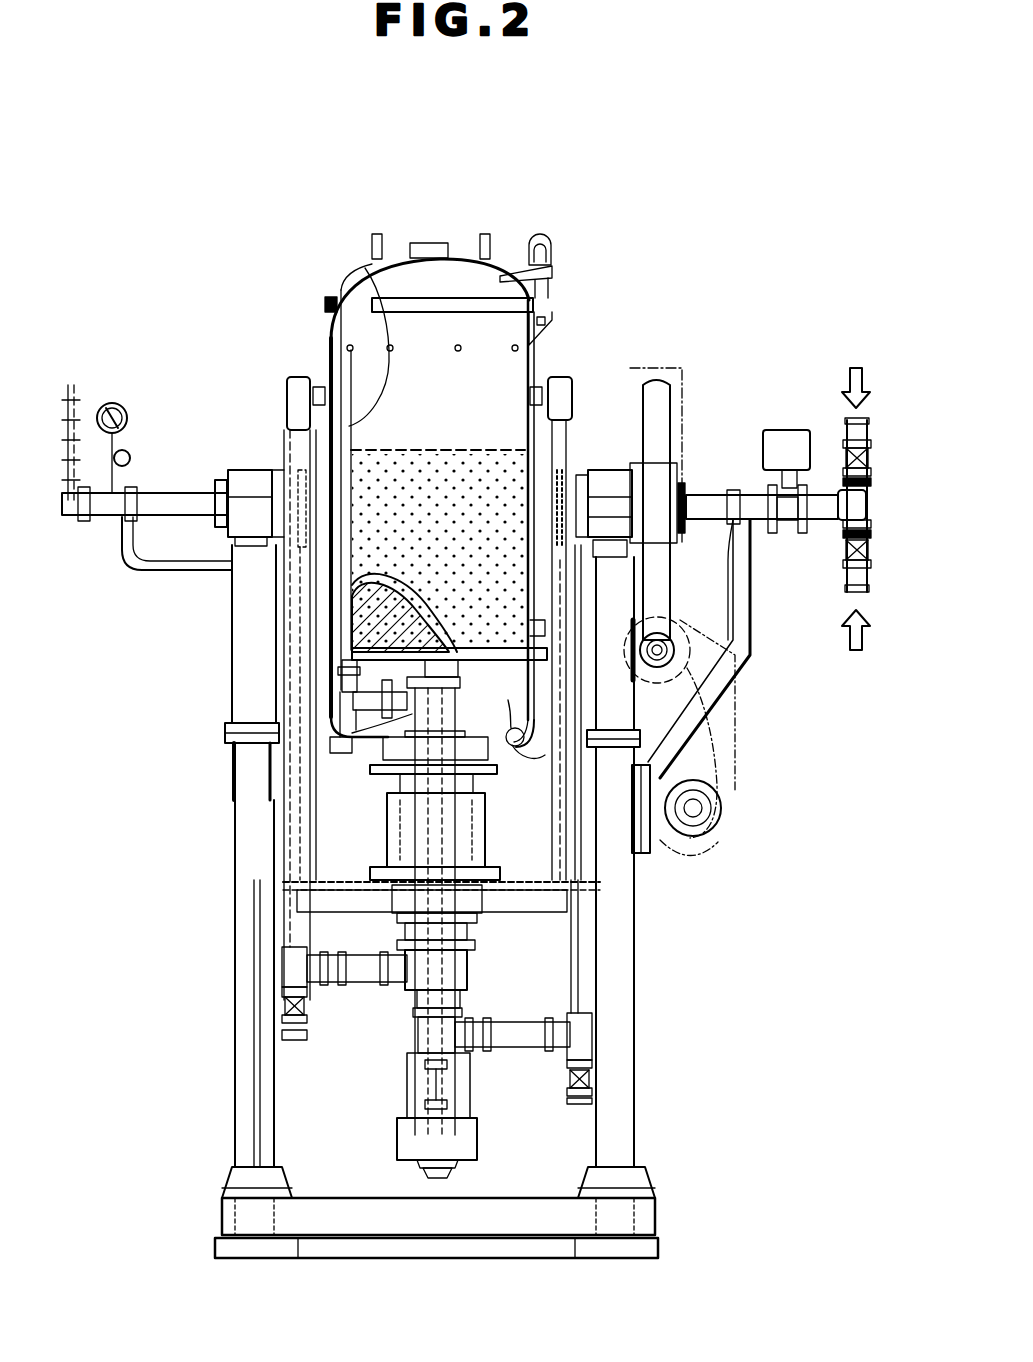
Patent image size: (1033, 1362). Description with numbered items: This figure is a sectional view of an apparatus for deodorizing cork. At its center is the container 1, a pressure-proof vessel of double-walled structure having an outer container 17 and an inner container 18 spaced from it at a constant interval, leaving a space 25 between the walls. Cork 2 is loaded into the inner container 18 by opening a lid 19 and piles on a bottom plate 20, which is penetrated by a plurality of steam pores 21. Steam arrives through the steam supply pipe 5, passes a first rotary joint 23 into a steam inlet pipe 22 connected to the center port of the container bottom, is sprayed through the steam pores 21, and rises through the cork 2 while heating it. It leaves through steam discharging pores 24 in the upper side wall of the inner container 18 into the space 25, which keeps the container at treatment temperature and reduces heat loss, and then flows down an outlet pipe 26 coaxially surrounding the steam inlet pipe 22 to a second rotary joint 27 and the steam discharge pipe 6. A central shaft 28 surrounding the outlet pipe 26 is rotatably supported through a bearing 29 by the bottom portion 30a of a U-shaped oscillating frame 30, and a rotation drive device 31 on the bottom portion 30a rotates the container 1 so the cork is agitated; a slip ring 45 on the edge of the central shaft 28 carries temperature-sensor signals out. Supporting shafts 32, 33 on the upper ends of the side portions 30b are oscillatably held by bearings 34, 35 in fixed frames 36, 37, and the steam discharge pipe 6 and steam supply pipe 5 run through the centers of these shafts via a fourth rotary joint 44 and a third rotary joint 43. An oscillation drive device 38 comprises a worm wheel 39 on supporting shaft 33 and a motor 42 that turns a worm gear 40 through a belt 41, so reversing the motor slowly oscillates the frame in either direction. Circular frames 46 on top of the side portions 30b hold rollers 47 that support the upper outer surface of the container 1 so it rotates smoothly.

The container 1 is at (272, 202).
The cork 2 is at (548, 332).
The steam supply pipe 5 is at (716, 510).
The steam discharge pipe 6 is at (174, 500).
The outer container 17 is at (336, 375).
The inner container 18 is at (350, 358).
The lid 19 is at (396, 268).
The bottom plate 20 is at (360, 688).
The steam pores 21 is at (472, 642).
The steam inlet pipe 22 is at (472, 668).
The first rotary joint 23 is at (452, 1024).
The steam discharging pores 24 is at (390, 344).
The space 25 is at (343, 368).
The outlet pipe 26 is at (345, 742).
The second rotary joint 27 is at (410, 982).
The central shaft 28 is at (268, 793).
The bearing 29 is at (332, 884).
The oscillating frame 30 is at (270, 843).
The bottom portion 30a is at (292, 920).
The side portions 30b is at (295, 662).
The rotation drive device 31 is at (372, 818).
The supporting shaft 32 is at (220, 492).
The supporting shaft 33 is at (686, 506).
The bearing 34 is at (242, 470).
The bearing 35 is at (611, 500).
The fixed frame 36 is at (238, 568).
The fixed frame 37 is at (620, 582).
The oscillation drive device 38 is at (766, 724).
The worm wheel 39 is at (658, 412).
The worm gear 40 is at (668, 650).
The belt 41 is at (702, 684).
The motor 42 is at (680, 826).
The third rotary joint 43 is at (582, 492).
The fourth rotary joint 44 is at (302, 484).
The slip ring 45 is at (468, 1137).
The circular frames 46 is at (290, 402).
The rollers 47 is at (318, 394).